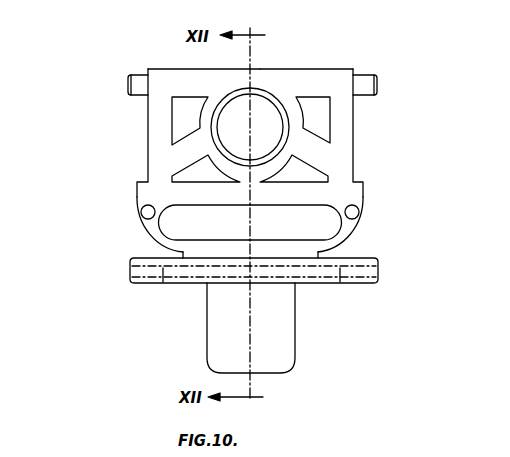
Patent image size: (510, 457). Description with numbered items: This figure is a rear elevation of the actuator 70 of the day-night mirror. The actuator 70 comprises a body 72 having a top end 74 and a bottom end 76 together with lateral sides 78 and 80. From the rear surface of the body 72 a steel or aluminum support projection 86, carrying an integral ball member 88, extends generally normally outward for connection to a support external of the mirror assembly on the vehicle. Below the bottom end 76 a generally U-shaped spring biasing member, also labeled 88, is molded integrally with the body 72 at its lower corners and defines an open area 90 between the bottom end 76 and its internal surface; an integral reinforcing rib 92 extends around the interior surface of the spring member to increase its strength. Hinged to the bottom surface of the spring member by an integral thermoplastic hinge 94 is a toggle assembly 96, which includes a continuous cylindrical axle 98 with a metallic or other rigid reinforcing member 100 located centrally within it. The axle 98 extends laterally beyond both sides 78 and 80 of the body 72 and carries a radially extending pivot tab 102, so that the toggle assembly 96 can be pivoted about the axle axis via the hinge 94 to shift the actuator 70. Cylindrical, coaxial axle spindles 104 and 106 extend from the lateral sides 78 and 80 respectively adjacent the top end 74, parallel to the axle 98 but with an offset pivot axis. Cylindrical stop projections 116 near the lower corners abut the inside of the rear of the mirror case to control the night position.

The actuator 70 is at (164, 56).
The body 72 is at (268, 73).
The top end 74 is at (325, 67).
The bottom end 76 is at (184, 207).
The lateral side 78 is at (355, 142).
The lateral side 80 is at (147, 137).
The support projection 86 is at (232, 90).
The ball member 88 is at (277, 133).
The open area 90 is at (173, 218).
The reinforcing rib 92 is at (265, 237).
The thermoplastic hinge 94 is at (282, 247).
The toggle assembly 96 is at (172, 287).
The continuous cylindrical axle 98 is at (143, 284).
The reinforcing member 100 is at (380, 268).
The pivot tab 102 is at (277, 335).
The axle spindle 104 is at (365, 83).
The axle spindle 106 is at (133, 78).
The cylindrical stop projections 116 is at (141, 212).